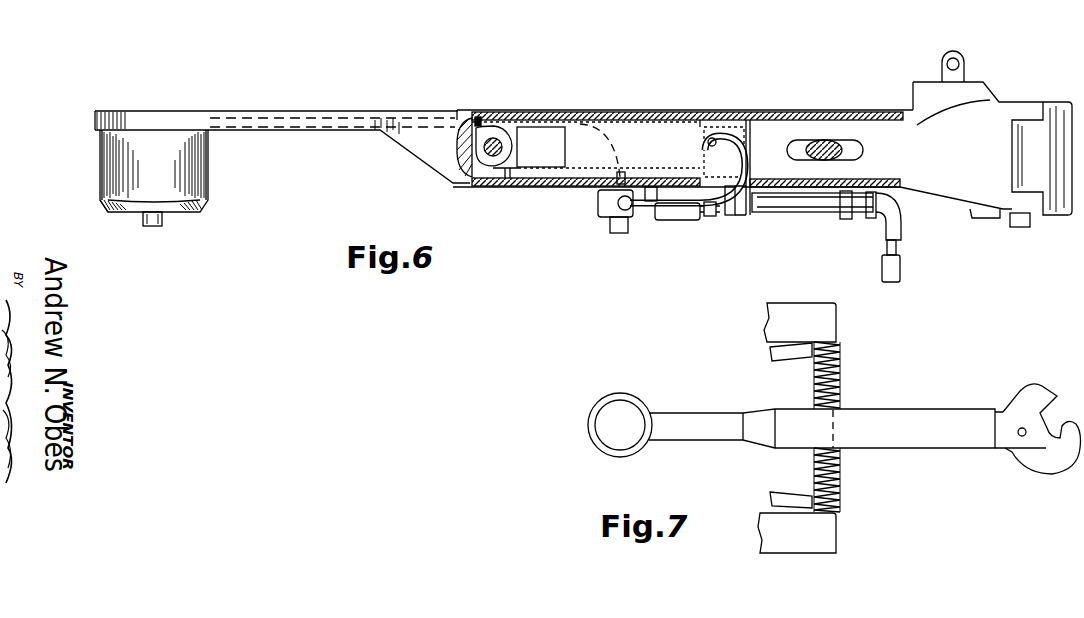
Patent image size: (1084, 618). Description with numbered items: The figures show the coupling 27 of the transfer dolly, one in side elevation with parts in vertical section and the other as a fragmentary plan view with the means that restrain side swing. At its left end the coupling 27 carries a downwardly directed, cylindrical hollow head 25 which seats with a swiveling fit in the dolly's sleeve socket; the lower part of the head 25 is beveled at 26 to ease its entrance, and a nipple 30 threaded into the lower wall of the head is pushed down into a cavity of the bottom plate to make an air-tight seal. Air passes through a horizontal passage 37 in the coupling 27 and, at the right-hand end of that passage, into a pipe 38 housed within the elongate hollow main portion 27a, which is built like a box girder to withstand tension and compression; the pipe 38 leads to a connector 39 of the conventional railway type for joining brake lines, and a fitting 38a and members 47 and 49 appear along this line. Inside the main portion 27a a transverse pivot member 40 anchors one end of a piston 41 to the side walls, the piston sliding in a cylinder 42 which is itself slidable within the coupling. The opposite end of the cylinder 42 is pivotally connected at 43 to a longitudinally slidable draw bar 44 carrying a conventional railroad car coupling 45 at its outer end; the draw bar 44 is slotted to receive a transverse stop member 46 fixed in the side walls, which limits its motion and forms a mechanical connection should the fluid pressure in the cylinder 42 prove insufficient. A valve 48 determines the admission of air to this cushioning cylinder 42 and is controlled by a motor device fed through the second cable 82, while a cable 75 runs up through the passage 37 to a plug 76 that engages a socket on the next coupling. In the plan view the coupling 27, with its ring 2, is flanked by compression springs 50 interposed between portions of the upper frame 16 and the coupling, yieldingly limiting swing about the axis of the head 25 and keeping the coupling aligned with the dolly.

In FIG. 7, the ring eye of coupling bar 2 is at (632, 402).
In FIG. 7, the upper frame 16 is at (792, 312).
In FIG. 6, the hollow head 25 is at (208, 178).
In FIG. 6, the bevel 26 is at (110, 208).
In FIG. 6, the coupling 27 is at (447, 77).
In FIG. 7, the coupling 27 is at (918, 403).
In FIG. 6, the elongate hollow main portion 27a is at (772, 118).
In FIG. 6, the nipple 30 is at (162, 222).
In FIG. 6, the horizontal passage 37 is at (315, 120).
In FIG. 6, the pipe 38 is at (472, 122).
In FIG. 6, the rod plate 38a is at (738, 208).
In FIG. 6, the connector 39 is at (901, 220).
In FIG. 6, the transverse pivot member 40 is at (498, 140).
In FIG. 6, the piston 41 is at (545, 135).
In FIG. 6, the cylinder 42 is at (655, 140).
In FIG. 6, the pivotal connection 43 is at (725, 145).
In FIG. 6, the draw bar 44 is at (862, 132).
In FIG. 6, the railroad car coupling 45 is at (1025, 105).
In FIG. 6, the transverse stop member 46 is at (820, 140).
In FIG. 6, the valve block 47 is at (672, 221).
In FIG. 6, the valve 48 is at (605, 218).
In FIG. 6, the fitting 49 is at (714, 216).
In FIG. 7, the compression springs 50 is at (840, 362).
In FIG. 6, the cable 75 is at (640, 112).
In FIG. 6, the plug 76 is at (900, 266).
In FIG. 6, the second cable 82 is at (630, 157).